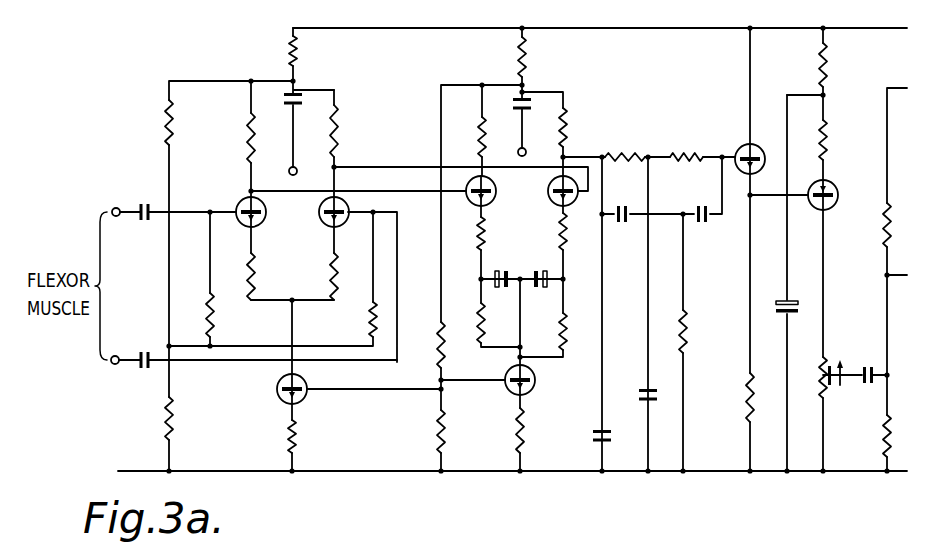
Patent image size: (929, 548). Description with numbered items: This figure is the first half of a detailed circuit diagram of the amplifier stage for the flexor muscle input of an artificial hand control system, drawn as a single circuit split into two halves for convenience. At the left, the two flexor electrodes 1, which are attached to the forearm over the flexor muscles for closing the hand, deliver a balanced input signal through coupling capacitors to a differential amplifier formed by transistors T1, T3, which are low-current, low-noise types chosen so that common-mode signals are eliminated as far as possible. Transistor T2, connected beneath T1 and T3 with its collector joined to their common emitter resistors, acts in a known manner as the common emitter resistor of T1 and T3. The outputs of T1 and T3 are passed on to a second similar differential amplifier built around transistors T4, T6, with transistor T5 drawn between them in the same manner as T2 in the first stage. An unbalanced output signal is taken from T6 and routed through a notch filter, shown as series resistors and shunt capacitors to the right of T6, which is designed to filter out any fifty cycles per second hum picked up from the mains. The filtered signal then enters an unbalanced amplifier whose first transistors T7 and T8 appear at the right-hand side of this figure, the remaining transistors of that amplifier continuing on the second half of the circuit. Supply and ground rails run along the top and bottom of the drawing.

The flexor electrodes 1 is at (111, 208).
The transistor T1 is at (333, 189).
The transistor T2 is at (359, 385).
The transistor T3 is at (442, 195).
The transistor T4 is at (493, 214).
The transistor T5 is at (528, 376).
The transistor T6 is at (554, 232).
The transistor T7 is at (759, 249).
The transistor T8 is at (817, 249).